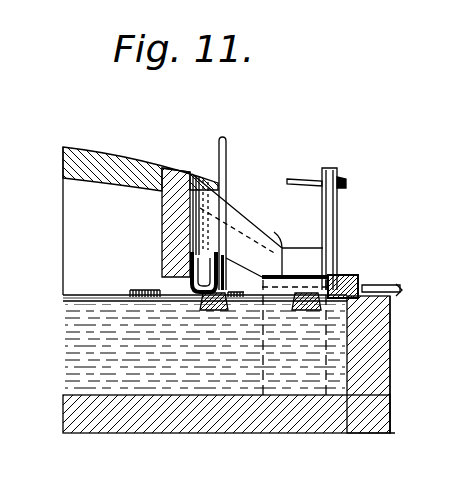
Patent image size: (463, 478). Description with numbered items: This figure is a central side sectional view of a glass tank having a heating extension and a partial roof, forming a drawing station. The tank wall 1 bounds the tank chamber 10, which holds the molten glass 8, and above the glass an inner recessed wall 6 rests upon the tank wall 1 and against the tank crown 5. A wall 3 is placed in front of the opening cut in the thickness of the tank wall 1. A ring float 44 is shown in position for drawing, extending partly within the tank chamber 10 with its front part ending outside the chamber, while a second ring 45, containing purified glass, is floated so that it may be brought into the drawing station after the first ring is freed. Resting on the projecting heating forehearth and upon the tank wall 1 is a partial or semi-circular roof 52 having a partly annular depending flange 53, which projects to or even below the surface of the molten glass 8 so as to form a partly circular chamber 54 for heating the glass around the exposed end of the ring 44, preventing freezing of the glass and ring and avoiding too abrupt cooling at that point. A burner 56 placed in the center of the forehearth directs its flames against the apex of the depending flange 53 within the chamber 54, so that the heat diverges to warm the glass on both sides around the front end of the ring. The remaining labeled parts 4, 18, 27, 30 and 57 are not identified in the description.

The tank wall 1 is at (306, 247).
The wall 3 is at (457, 209).
The ash trough 4 is at (167, 282).
The tank crown 5 is at (88, 148).
The inner recessed wall 6 is at (160, 223).
The molten glass 8 is at (63, 298).
The tank chamber 10 is at (79, 229).
The chute 18 is at (206, 247).
The post 27 is at (338, 215).
The rod 30 is at (228, 151).
The ring float 44 is at (203, 310).
The ring 45 is at (83, 290).
The partial roof 52 is at (345, 270).
The depending flange 53 is at (383, 308).
The partly circular chamber 54 is at (368, 287).
The burner 56 is at (398, 288).
The outer wall 57 is at (373, 341).